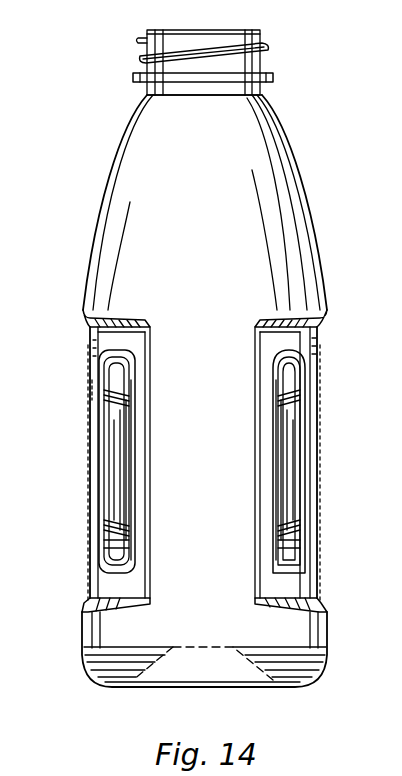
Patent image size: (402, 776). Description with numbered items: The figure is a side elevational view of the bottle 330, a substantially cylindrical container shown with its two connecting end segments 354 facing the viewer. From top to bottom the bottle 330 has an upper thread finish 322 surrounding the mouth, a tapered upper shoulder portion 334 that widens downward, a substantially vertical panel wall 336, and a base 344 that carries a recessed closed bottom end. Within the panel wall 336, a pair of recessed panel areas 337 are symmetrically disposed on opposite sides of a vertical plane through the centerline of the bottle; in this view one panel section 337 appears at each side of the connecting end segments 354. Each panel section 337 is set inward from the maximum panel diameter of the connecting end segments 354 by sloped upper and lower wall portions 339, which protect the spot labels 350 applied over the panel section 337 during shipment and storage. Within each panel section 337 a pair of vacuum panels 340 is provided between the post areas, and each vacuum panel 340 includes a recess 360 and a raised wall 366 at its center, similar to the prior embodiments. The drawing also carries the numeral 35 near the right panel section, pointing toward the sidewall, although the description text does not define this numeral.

The upper thread finish 322 is at (146, 66).
The bottle 330 is at (100, 192).
The tapered upper shoulder portion 334 is at (118, 141).
The sloped upper and lower wall portions 339 is at (84, 321).
The recessed panel area 337 is at (95, 344).
The spot label 350 is at (90, 389).
The sidewall plane 35 is at (322, 375).
The vacuum panel 340 is at (100, 420).
The raised wall 366 is at (110, 451).
The panel wall 336 is at (90, 499).
The recess 360 is at (118, 562).
The connecting end segment 354 is at (234, 415).
The base 344 is at (330, 638).